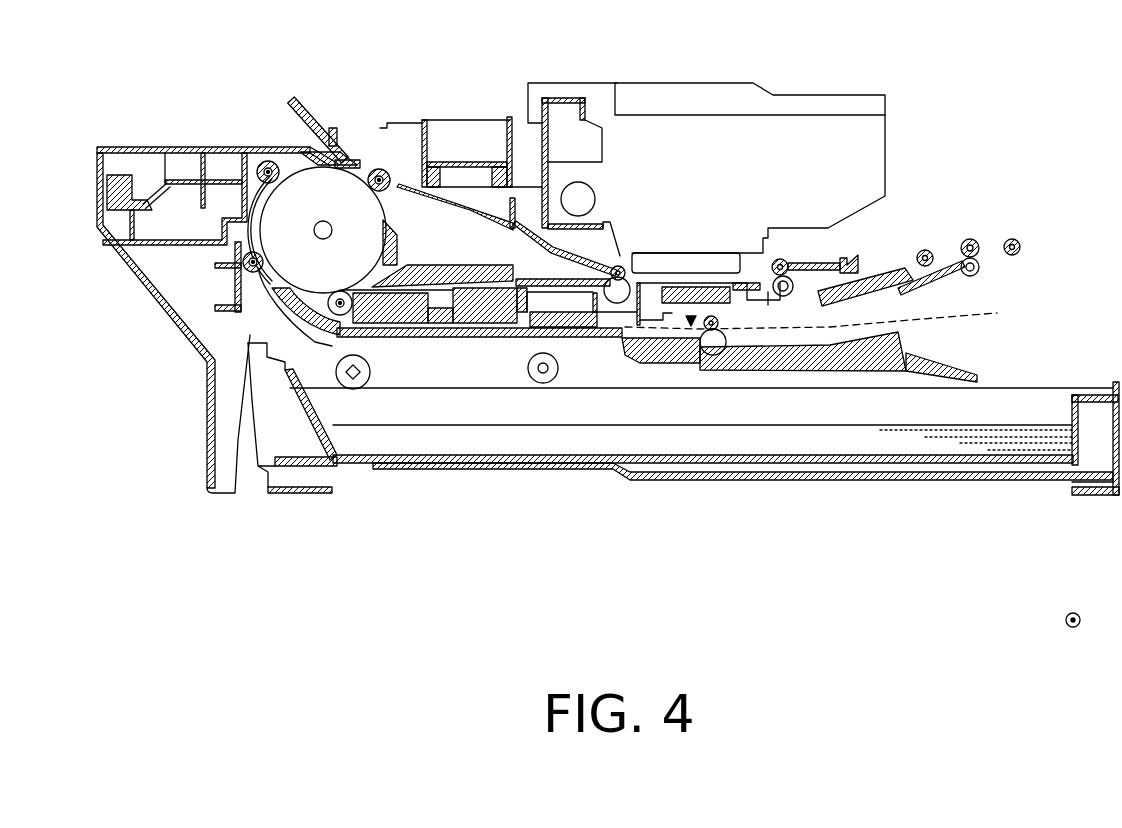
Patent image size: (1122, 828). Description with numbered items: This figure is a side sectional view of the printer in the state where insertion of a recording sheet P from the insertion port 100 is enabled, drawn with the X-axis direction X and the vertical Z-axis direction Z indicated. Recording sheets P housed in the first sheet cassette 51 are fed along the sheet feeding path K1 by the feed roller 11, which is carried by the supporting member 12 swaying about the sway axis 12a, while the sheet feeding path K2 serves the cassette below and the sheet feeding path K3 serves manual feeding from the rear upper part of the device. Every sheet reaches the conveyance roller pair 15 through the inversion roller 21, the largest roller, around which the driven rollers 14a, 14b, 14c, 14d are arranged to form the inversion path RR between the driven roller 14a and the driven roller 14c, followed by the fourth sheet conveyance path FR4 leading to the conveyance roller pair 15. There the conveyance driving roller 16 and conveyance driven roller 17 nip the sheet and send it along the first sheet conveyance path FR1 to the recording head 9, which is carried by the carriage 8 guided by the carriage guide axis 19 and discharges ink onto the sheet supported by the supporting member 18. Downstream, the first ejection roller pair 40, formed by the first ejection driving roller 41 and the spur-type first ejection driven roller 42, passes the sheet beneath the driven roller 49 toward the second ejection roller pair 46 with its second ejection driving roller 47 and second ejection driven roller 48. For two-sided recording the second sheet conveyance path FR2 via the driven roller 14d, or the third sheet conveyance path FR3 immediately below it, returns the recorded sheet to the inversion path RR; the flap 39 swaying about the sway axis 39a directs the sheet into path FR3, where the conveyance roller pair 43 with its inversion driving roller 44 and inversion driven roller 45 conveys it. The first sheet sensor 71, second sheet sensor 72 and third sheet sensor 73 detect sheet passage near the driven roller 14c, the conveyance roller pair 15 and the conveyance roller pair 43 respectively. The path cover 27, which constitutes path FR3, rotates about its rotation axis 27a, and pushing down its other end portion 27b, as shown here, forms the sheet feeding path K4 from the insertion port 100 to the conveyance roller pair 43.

The carriage 8 is at (703, 265).
The recording head 9 is at (700, 262).
The feed roller 11 is at (343, 300).
The supporting member 12 is at (420, 390).
The sway axis 12a is at (543, 384).
The driven roller 14a is at (233, 292).
The driven roller 14b is at (262, 162).
The driven roller 14c is at (385, 170).
The driven roller 14d is at (349, 316).
The conveyance roller pair 15 is at (616, 156).
The conveyance driving roller 16 is at (612, 266).
The conveyance driven roller 17 is at (622, 278).
The supporting member 18 is at (647, 253).
The carriage guide axis 19 is at (536, 205).
The inversion roller 21 is at (370, 175).
The path cover 27 is at (793, 368).
The rotation axis 27a is at (620, 345).
The other end portion 27b is at (980, 376).
The flap 39 is at (893, 282).
The sway axis 39a is at (850, 257).
The first ejection roller pair 40 is at (793, 216).
The first ejection driving roller 41 is at (790, 277).
The first ejection driven roller 42 is at (777, 259).
The conveyance roller pair 43 is at (692, 439).
The inversion driving roller 44 is at (698, 363).
The inversion driven roller 45 is at (725, 362).
The second ejection roller pair 46 is at (994, 166).
The second ejection driving roller 47 is at (1008, 239).
The second ejection driven roller 48 is at (968, 239).
The driven roller 49 is at (926, 250).
The first sheet cassette 51 is at (1010, 460).
The first sheet sensor 71 is at (423, 118).
The second sheet sensor 72 is at (578, 182).
The third sheet sensor 73 is at (663, 353).
The insertion port 100 is at (998, 313).
The first sheet conveyance path FR1 is at (733, 240).
The second sheet conveyance path FR2 is at (447, 118).
The third sheet conveyance path FR3 is at (500, 397).
The fourth sheet conveyance path FR4 is at (538, 200).
The sheet feeding path K1 is at (283, 505).
The sheet feeding path K2 is at (230, 432).
The sheet feeding path K3 is at (250, 60).
The sheet feeding path K4 is at (880, 328).
The recording sheet P is at (868, 455).
The inversion path RR is at (225, 143).
The X-axis direction X is at (1117, 620).
The Z-axis direction Z is at (1073, 612).